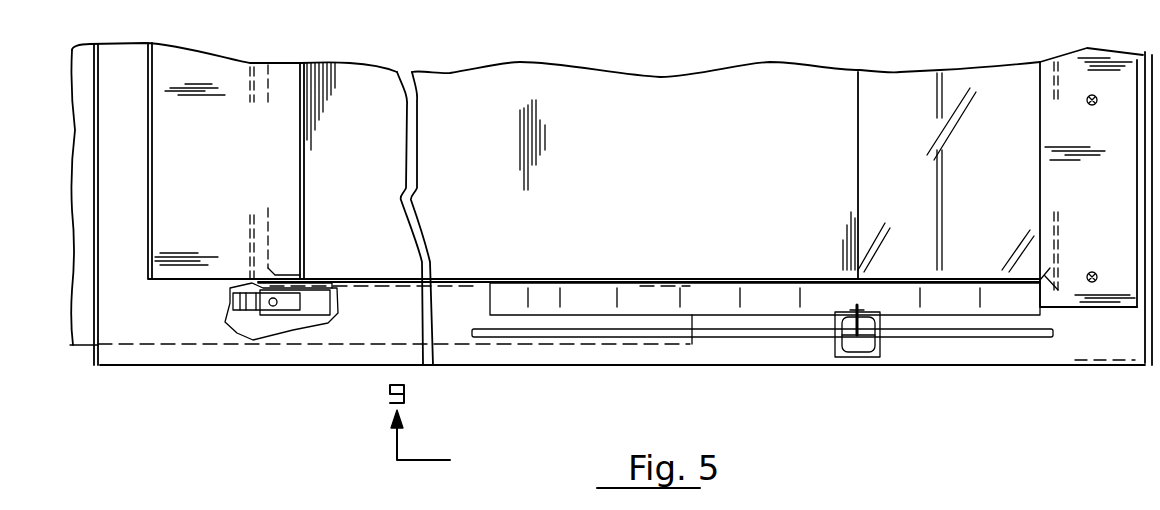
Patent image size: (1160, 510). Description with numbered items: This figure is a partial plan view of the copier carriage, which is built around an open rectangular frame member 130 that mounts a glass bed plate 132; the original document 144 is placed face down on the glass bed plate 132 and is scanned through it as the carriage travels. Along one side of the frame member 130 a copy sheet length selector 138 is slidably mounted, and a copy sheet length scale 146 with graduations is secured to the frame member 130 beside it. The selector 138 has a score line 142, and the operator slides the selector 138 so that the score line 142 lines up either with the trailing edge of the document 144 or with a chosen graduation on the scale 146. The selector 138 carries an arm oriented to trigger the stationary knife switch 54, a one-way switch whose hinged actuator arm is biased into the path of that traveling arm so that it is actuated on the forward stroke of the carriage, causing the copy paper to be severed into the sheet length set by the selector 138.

The knife switch 54 is at (287, 315).
The frame member 130 is at (180, 328).
The glass bed plate 132 is at (997, 108).
The copy sheet length selector 138 is at (833, 345).
The score line 142 is at (857, 342).
The document 144 is at (838, 120).
The copy sheet length scale 146 is at (502, 316).